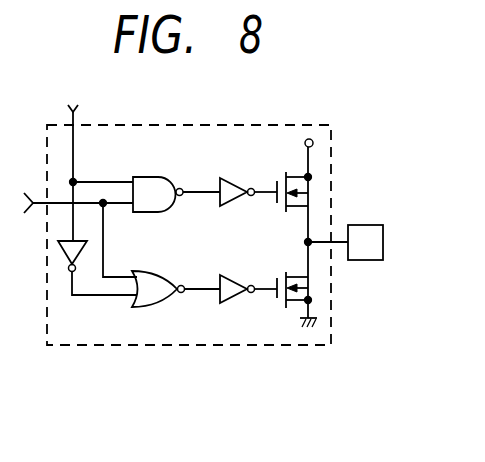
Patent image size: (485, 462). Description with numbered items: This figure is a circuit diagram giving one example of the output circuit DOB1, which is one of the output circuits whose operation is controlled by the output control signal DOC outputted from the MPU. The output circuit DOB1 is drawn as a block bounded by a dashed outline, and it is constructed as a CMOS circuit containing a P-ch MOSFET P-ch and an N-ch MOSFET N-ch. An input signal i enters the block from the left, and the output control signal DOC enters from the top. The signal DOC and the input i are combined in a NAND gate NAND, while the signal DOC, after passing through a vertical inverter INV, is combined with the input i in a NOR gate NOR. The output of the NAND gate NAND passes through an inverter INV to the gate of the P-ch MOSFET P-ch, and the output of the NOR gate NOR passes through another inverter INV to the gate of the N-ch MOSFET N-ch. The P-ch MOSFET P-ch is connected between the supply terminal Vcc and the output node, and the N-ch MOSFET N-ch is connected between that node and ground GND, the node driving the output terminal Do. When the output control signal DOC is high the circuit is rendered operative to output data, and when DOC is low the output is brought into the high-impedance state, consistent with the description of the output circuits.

The output circuit DOB1 is at (248, 345).
The output control signal DOC is at (97, 158).
The input signal i is at (73, 231).
The NAND gate NAND is at (166, 177).
The NOR gate NOR is at (174, 273).
The inverter INV is at (38, 253).
The supply voltage terminal Vcc is at (290, 153).
The P-ch MOSFET P-ch is at (312, 189).
The N-ch MOSFET N-ch is at (312, 282).
The ground terminal GND is at (284, 322).
The data output terminal Do is at (368, 227).